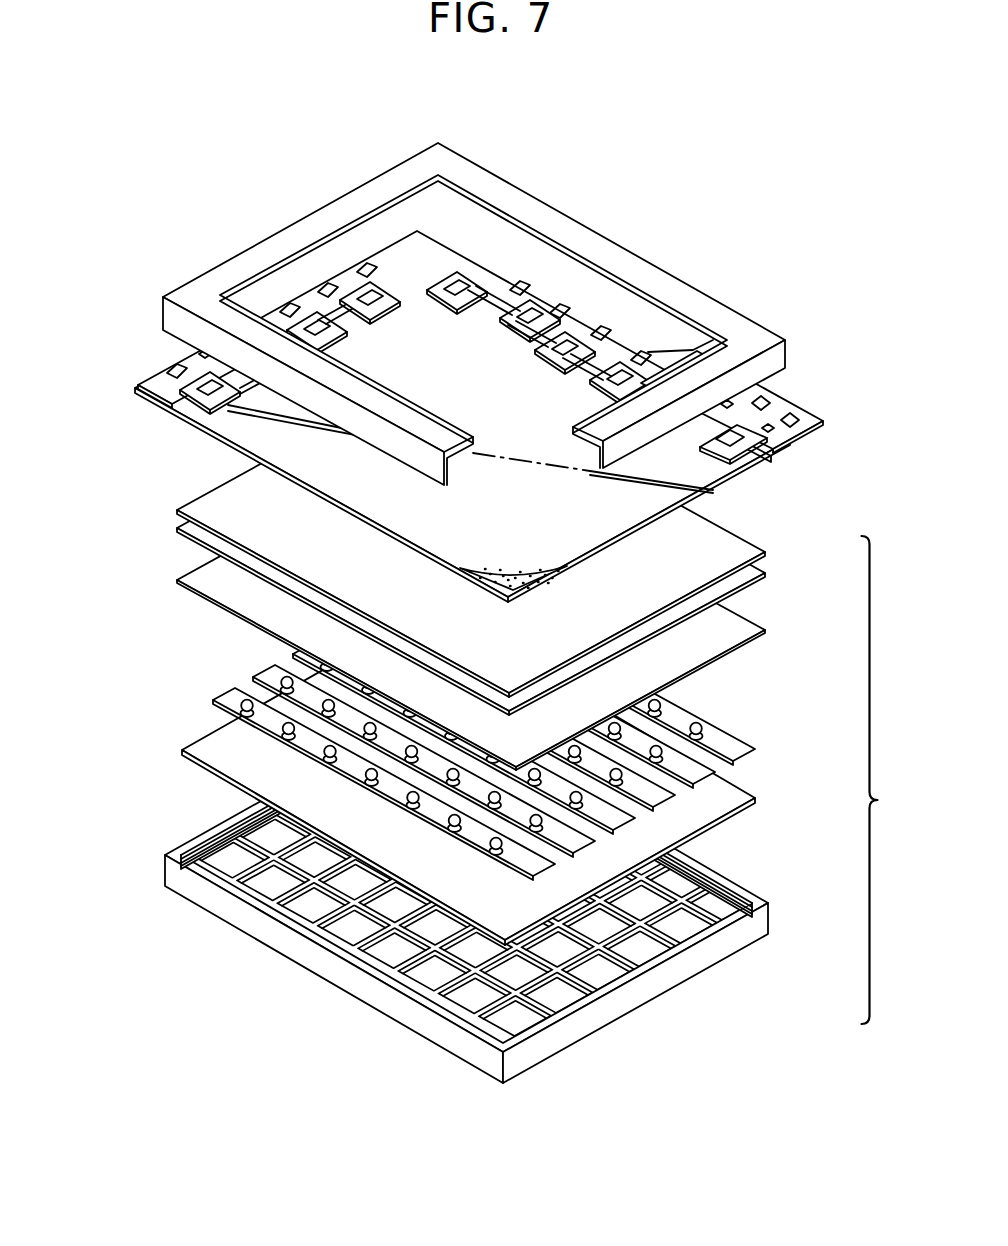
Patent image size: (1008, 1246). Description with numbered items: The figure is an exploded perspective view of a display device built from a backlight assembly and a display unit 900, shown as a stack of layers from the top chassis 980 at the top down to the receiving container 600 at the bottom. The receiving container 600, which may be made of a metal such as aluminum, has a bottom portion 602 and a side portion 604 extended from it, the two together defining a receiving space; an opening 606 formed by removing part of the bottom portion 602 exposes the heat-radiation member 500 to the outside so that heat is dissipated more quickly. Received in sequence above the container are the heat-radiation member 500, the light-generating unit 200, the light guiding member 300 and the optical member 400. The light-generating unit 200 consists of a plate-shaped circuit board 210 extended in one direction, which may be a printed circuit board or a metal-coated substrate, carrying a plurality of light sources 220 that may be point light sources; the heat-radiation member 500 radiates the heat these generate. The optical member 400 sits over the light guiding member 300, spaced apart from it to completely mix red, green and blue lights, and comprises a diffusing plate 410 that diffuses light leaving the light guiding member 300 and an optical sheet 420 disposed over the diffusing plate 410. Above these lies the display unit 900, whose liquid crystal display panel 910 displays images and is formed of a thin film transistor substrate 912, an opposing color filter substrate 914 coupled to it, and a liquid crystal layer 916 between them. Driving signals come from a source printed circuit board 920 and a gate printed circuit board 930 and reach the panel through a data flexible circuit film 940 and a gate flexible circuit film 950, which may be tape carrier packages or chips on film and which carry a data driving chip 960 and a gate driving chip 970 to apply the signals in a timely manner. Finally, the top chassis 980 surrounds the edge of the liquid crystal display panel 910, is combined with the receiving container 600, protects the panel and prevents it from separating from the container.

The top chassis 980 is at (722, 312).
The source printed circuit board 920 is at (803, 420).
The data flexible circuit film 940 is at (727, 452).
The data driving chip 960 is at (760, 452).
The gate printed circuit board 930 is at (160, 373).
The gate driving chip 970 is at (138, 390).
The gate flexible circuit film 950 is at (173, 405).
The display unit 900 is at (427, 416).
The liquid crystal display panel 910 is at (431, 416).
The thin film transistor substrate 912 is at (217, 418).
The color filter substrate 914 is at (243, 433).
The liquid crystal layer 916 is at (493, 560).
The optical member 400 is at (522, 542).
The optical sheet 420 is at (748, 552).
The diffusing plate 410 is at (748, 573).
The light guiding member 300 is at (750, 622).
The light-generating unit 200 is at (428, 726).
The light sources 220 is at (232, 690).
The circuit board 210 is at (241, 709).
The heat-radiation member 500 is at (182, 750).
The receiving container 600 is at (420, 894).
The bottom portion 602 is at (270, 842).
The side portion 604 is at (310, 958).
The opening 606 is at (262, 866).